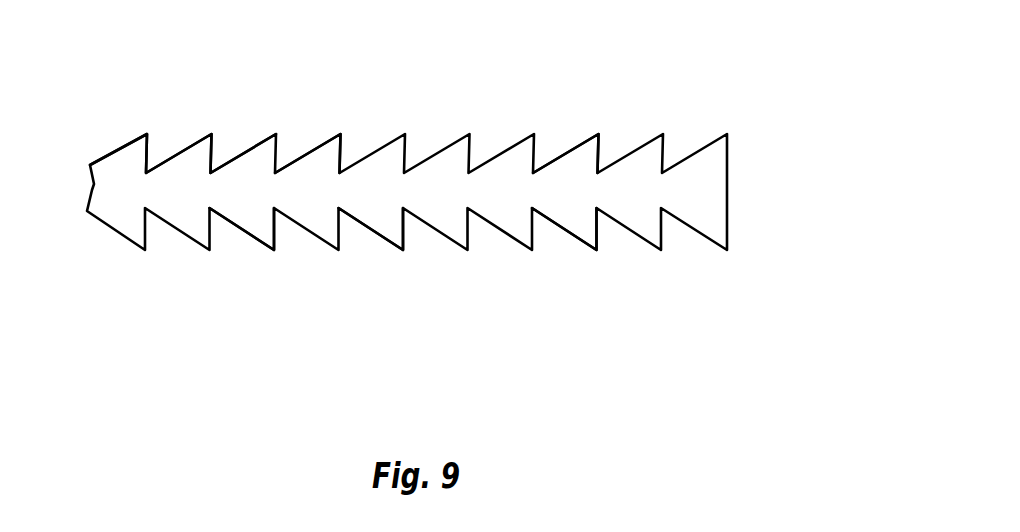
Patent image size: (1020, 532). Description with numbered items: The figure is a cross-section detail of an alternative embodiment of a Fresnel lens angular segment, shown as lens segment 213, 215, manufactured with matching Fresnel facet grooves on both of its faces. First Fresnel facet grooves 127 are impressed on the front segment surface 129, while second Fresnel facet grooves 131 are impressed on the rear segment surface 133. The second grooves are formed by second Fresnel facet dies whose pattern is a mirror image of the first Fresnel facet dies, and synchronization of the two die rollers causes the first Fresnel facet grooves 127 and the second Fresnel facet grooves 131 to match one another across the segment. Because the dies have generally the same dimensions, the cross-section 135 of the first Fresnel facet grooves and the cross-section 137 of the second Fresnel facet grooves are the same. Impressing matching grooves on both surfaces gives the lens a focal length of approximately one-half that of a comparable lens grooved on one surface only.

The first Fresnel facet grooves 127 is at (127, 138).
The front segment surface 129 is at (340, 133).
The second Fresnel facet grooves 131 is at (238, 228).
The rear segment surface 133 is at (401, 249).
The cross-section of first Fresnel facet grooves 135 is at (590, 148).
The cross-section of second Fresnel facet grooves 137 is at (580, 230).
The lens segment 213 is at (492, 192).
The lens segment 215 is at (710, 186).